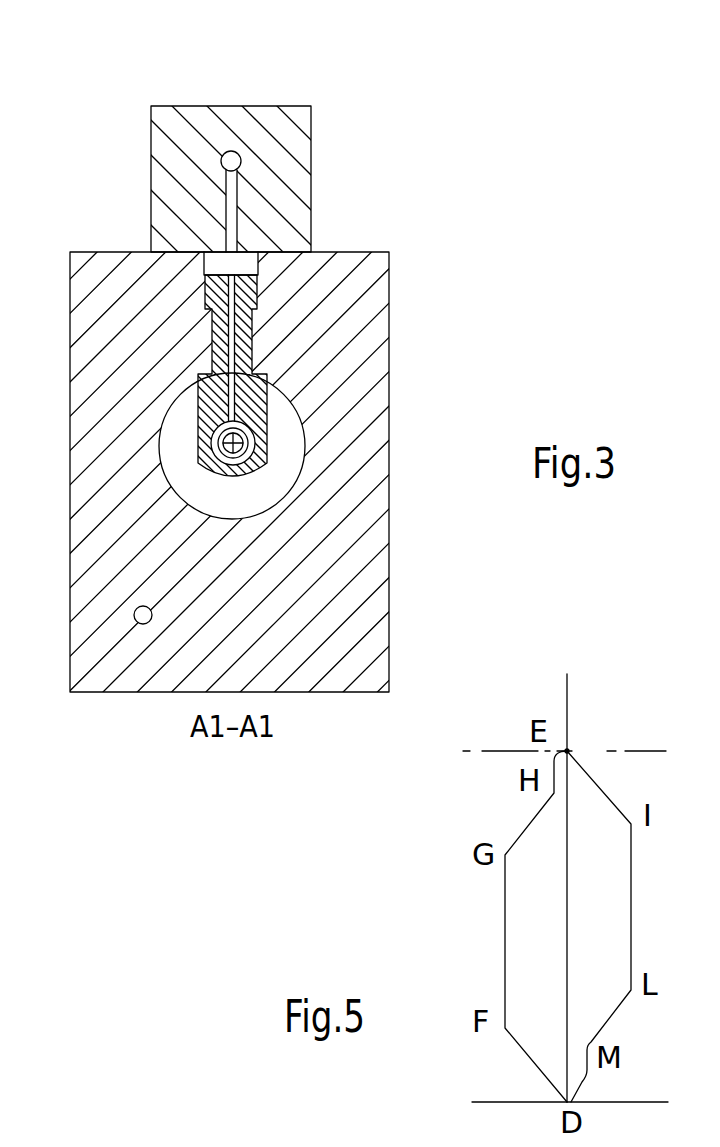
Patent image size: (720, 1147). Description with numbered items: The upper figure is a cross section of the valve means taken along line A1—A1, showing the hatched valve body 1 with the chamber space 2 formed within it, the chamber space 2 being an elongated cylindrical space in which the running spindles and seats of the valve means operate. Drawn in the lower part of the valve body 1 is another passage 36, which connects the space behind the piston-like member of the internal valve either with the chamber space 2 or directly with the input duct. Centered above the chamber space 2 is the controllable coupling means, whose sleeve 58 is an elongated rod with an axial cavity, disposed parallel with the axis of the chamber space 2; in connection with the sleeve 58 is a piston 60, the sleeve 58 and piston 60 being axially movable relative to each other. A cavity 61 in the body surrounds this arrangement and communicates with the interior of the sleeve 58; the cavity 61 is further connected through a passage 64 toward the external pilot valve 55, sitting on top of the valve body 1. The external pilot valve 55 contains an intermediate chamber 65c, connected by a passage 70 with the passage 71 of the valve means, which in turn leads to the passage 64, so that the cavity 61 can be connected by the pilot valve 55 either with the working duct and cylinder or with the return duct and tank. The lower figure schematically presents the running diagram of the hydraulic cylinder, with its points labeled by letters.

The valve body 1 is at (388, 275).
The chamber space 2 is at (190, 483).
The passage 36 is at (134, 615).
The external pilot valve 55 is at (298, 90).
The sleeve 58 is at (200, 425).
The piston 60 is at (240, 444).
The cavity 61 is at (250, 432).
The passage 64 is at (232, 340).
The intermediate chamber 65c is at (240, 160).
The passage 70 is at (233, 203).
The passage 71 is at (204, 266).